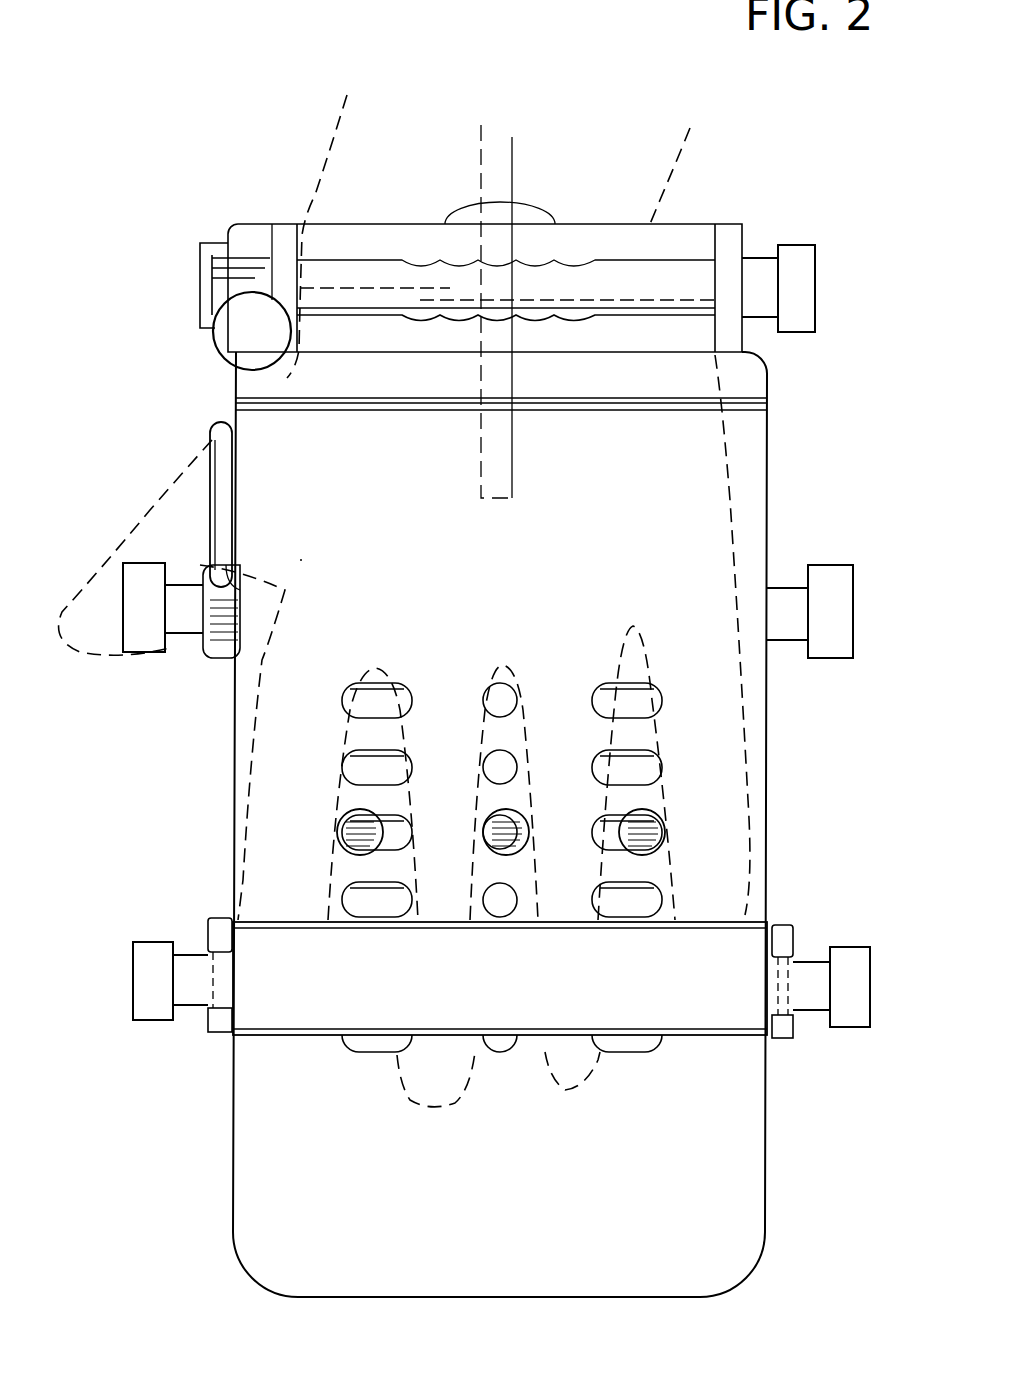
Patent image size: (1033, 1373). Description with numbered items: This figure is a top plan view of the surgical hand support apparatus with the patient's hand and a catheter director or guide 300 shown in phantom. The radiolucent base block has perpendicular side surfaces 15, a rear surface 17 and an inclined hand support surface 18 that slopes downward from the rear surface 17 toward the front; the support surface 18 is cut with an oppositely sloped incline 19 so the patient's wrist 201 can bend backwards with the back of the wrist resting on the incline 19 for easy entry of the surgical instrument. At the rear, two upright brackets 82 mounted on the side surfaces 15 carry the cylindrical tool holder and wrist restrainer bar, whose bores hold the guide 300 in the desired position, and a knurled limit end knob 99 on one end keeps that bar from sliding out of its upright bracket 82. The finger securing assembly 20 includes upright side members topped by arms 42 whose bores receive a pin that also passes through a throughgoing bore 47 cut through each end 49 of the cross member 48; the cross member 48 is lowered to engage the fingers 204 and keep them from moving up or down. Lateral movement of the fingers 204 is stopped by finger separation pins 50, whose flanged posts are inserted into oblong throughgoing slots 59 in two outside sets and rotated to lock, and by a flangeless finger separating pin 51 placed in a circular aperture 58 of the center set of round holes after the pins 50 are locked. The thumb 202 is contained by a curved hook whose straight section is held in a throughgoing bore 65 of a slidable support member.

The side surface 15 is at (232, 790).
The rear surface 17 is at (650, 224).
The inclined hand support surface 18 is at (616, 558).
The sloped incline 19 is at (606, 383).
The finger securing assembly 20 is at (133, 975).
The arm 42 is at (210, 1030).
The throughgoing bore 47 is at (790, 1000).
The cross member 48 is at (524, 995).
The end of cross member 49 is at (208, 958).
The finger separation pin 50 is at (655, 840).
The finger separating pin 51 is at (518, 840).
The circular aperture 58 is at (505, 690).
The throughgoing slot 59 is at (645, 692).
The throughgoing bore 65 is at (242, 595).
The upright bracket 82 is at (290, 224).
The knurled limit end knob 99 is at (818, 295).
The wrist 201 is at (618, 113).
The thumb 202 is at (140, 510).
The fingers 204 is at (396, 1106).
The catheter director or guide 300 is at (515, 168).